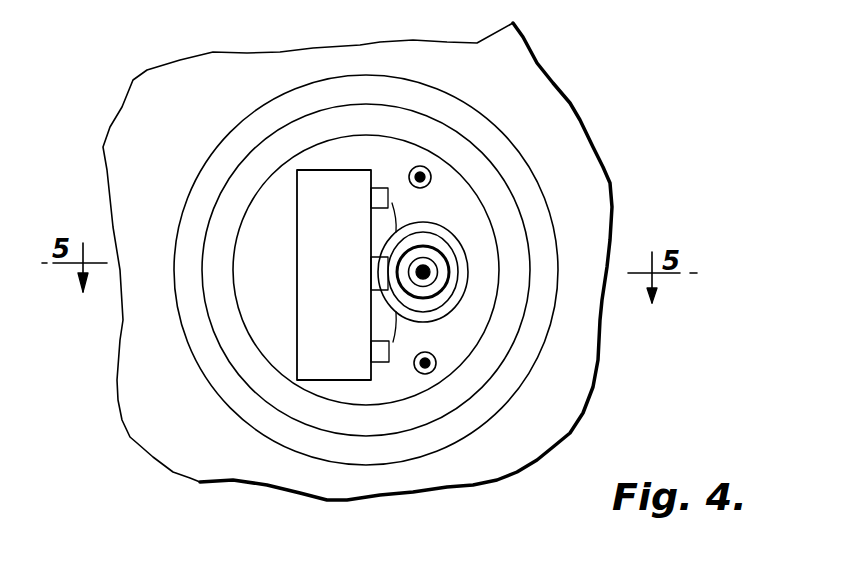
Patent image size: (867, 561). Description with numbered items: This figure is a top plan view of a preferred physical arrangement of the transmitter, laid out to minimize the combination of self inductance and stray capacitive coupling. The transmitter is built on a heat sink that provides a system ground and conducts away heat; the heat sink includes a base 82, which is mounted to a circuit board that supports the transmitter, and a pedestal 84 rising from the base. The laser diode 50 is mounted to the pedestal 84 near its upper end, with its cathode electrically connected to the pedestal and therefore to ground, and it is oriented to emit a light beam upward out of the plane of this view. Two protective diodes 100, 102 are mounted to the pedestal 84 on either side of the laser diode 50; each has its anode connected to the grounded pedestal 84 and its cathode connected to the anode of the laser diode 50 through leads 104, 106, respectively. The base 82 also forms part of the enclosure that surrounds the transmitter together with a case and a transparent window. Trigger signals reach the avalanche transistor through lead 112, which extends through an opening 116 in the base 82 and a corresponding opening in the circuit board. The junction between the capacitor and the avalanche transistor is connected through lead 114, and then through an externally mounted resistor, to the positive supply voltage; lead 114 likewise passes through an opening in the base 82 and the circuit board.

The laser diode 50 is at (386, 266).
The base 82 is at (260, 313).
The pedestal 84 is at (342, 268).
The protective diode 100 is at (385, 195).
The protective diode 102 is at (381, 359).
The lead 104 is at (390, 203).
The lead 106 is at (392, 350).
The lead 112 is at (427, 260).
The lead 114 is at (437, 305).
The opening 116 is at (422, 167).